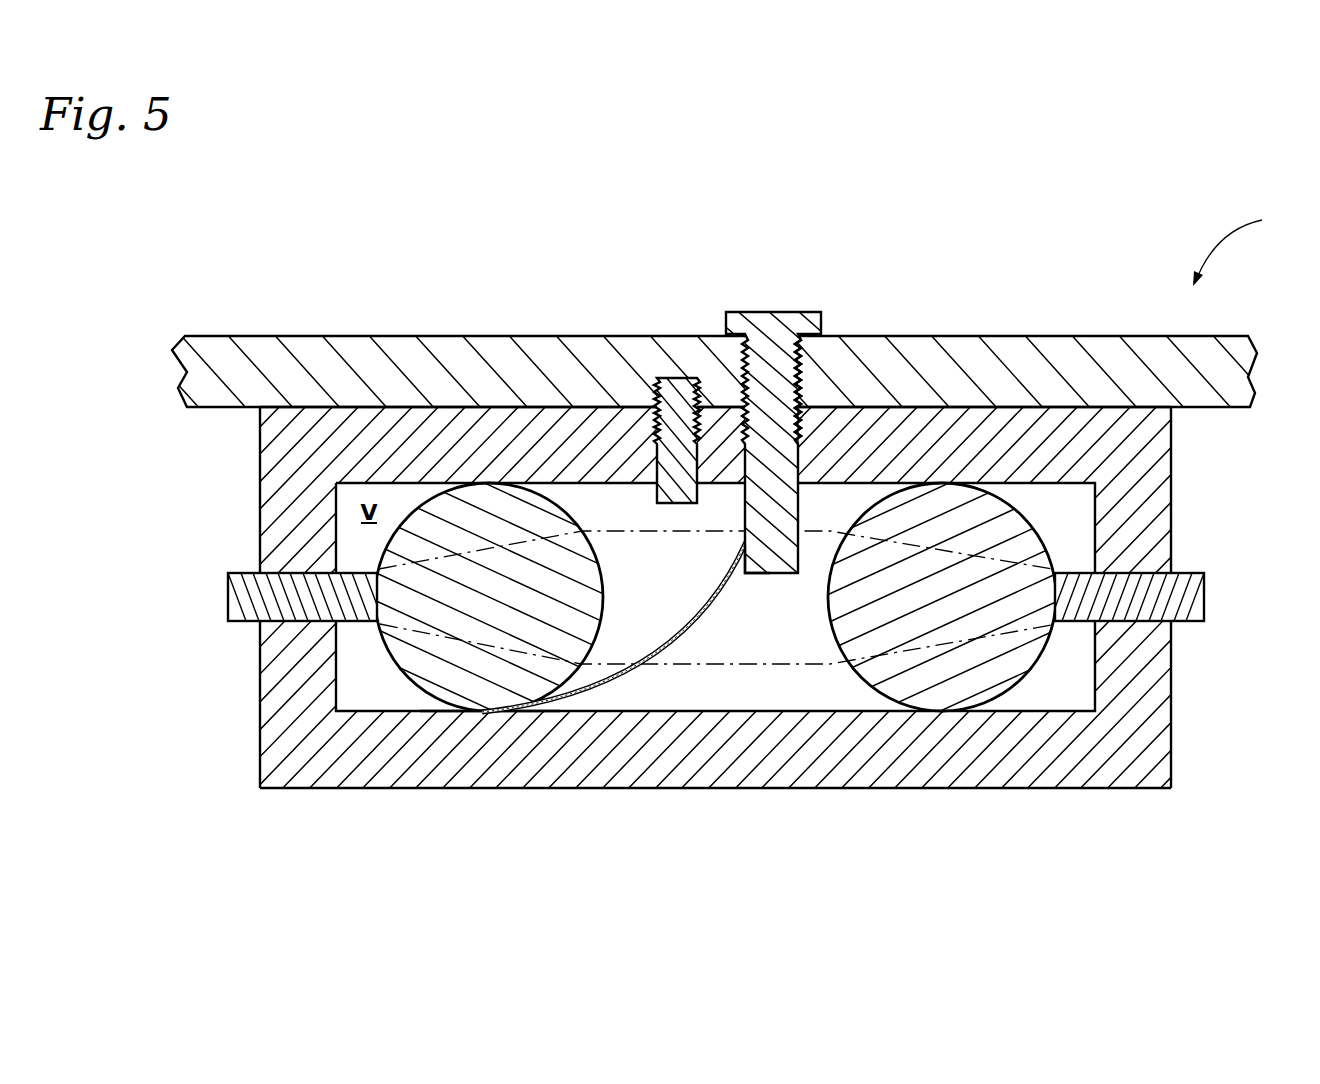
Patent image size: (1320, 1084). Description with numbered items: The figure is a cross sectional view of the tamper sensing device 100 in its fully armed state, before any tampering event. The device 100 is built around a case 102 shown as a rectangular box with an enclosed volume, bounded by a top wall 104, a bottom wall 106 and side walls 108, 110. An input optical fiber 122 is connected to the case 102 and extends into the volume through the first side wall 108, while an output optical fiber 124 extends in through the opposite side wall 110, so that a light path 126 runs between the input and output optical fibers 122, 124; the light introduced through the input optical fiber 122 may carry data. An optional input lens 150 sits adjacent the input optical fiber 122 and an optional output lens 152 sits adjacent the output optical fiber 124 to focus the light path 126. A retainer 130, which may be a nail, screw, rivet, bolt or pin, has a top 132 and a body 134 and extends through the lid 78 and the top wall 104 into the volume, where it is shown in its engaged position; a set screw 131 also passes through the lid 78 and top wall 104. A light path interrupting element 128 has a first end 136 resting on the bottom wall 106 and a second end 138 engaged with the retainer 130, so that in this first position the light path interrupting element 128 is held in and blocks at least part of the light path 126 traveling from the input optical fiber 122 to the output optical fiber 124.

The lid 78 is at (260, 335).
The tamper sensing device 100 is at (1256, 244).
The case 102 is at (660, 570).
The top wall 104 is at (1067, 407).
The bottom wall 106 is at (780, 788).
The side wall 108 is at (1172, 535).
The side wall 110 is at (260, 485).
The input optical fiber 122 is at (1185, 623).
The output optical fiber 124 is at (238, 623).
The light path 126 is at (802, 664).
The light path interrupting element 128 is at (622, 690).
The retainer 130 is at (800, 375).
The set screw 131 is at (658, 378).
The top 132 is at (757, 312).
The body 134 is at (847, 467).
The first end 136 is at (493, 712).
The second end 138 is at (745, 545).
The input lens 150 is at (1003, 693).
The output lens 152 is at (425, 695).